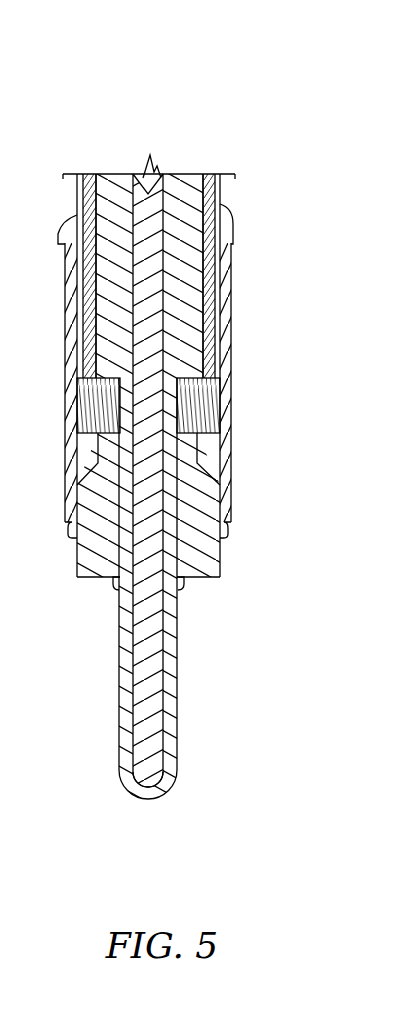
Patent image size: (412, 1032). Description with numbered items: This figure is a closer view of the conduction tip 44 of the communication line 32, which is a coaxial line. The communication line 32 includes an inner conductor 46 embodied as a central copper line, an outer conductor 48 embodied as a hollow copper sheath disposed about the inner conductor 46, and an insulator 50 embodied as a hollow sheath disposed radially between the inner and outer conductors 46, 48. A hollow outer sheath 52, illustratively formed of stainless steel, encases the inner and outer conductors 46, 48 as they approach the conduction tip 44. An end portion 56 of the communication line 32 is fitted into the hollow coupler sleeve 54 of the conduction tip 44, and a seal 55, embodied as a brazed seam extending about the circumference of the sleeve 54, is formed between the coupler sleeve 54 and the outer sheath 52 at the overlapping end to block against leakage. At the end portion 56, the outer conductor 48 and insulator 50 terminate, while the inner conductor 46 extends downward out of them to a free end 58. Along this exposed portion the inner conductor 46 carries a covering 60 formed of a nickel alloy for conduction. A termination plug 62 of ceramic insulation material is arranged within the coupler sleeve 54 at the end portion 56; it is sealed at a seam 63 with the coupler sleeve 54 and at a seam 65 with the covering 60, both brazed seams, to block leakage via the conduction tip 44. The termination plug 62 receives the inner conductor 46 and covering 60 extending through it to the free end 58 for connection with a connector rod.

The communication line 32 is at (278, 73).
The conduction tip 44 is at (323, 210).
The inner conductor 46 is at (157, 178).
The outer conductor 48 is at (92, 173).
The insulator 50 is at (125, 173).
The outer sheath 52 is at (77, 215).
The coupler sleeve 54 is at (226, 327).
The seal 55 is at (224, 218).
The end portion 56 is at (210, 392).
The free end 58 is at (192, 760).
The covering 60 is at (175, 634).
The termination plug 62 is at (203, 510).
The seam 63 is at (225, 533).
The seam 65 is at (178, 587).